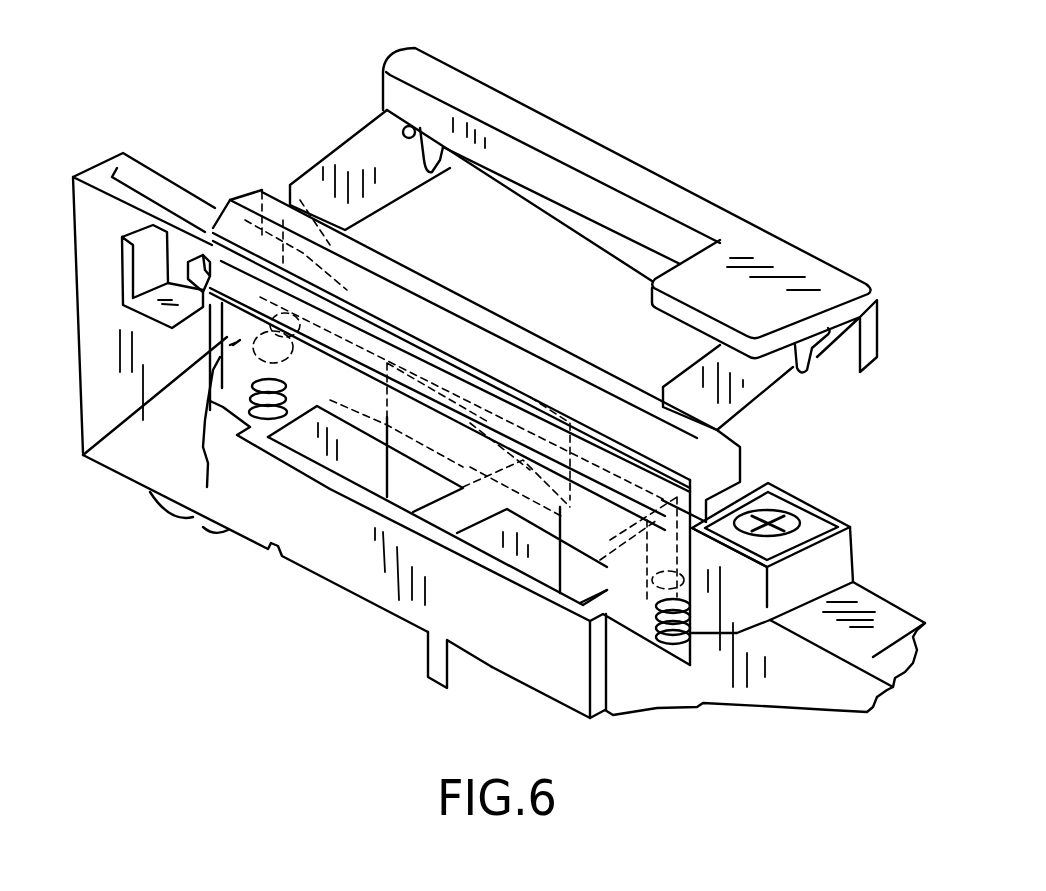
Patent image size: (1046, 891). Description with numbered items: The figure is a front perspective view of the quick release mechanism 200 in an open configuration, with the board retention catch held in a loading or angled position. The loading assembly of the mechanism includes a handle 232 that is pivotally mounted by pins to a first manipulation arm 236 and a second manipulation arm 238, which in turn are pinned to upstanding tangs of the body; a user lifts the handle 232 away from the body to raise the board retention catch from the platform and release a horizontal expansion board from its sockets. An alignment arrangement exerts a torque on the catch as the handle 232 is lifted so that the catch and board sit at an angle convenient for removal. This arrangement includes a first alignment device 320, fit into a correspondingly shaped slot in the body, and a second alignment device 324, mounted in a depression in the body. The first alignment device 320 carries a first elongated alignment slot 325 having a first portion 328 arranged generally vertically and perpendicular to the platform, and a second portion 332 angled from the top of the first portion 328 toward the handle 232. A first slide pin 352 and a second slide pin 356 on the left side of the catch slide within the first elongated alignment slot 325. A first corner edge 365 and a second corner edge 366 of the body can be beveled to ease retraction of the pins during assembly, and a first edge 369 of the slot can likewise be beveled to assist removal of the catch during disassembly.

The quick release mechanism 200 is at (700, 112).
The handle 232 is at (805, 246).
The first manipulation arm 236 is at (360, 147).
The second manipulation arm 238 is at (757, 393).
The first alignment device 320 is at (244, 215).
The second alignment device 324 is at (813, 522).
The first elongated alignment slot 325 is at (207, 487).
The first portion 328 is at (208, 452).
The second portion 332 is at (222, 255).
The first slide pin 352 is at (83, 455).
The second slide pin 356 is at (213, 300).
The first corner edge 365 is at (237, 345).
The second corner edge 366 is at (853, 582).
The first edge 369 is at (233, 343).